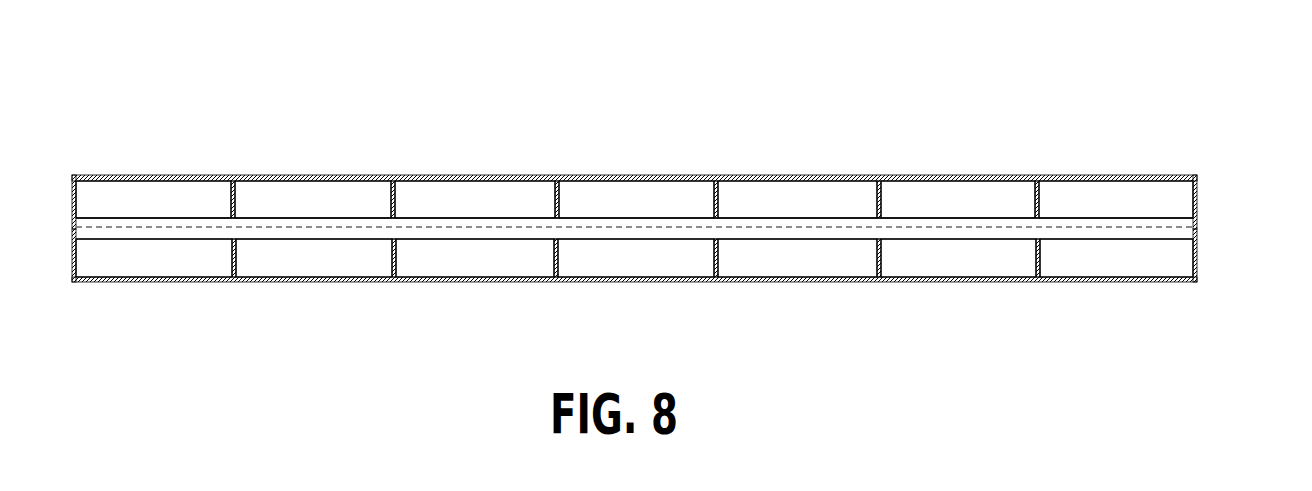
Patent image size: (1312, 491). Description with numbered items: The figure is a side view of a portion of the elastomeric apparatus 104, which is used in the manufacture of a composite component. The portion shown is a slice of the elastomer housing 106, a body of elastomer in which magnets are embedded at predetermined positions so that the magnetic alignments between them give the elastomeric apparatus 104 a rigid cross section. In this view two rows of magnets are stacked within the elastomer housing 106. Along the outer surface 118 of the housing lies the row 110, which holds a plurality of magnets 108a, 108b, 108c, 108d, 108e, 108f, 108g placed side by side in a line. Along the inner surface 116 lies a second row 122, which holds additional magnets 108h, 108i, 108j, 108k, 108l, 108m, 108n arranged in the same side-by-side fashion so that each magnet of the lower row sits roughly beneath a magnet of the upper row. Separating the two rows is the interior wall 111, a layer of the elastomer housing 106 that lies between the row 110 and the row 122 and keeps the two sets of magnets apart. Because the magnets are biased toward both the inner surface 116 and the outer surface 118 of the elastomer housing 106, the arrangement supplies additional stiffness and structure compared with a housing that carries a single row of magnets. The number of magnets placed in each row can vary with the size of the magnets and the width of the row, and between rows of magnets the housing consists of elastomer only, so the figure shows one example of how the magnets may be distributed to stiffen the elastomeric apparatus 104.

The elastomeric apparatus 104 is at (688, 187).
The elastomer housing 106 is at (1195, 232).
The magnet 108a is at (157, 192).
The magnet 108b is at (316, 192).
The magnet 108c is at (479, 192).
The magnet 108d is at (641, 192).
The magnet 108e is at (800, 192).
The magnet 108f is at (960, 192).
The magnet 108g is at (1122, 192).
The magnet 108h is at (153, 265).
The magnet 108i is at (313, 265).
The magnet 108j is at (475, 265).
The magnet 108k is at (635, 265).
The magnet 108l is at (795, 265).
The magnet 108m is at (955, 265).
The magnet 108n is at (1115, 265).
The row 110 is at (1199, 197).
The interior wall 111 is at (1148, 229).
The inner surface 116 is at (714, 284).
The outer surface 118 is at (724, 175).
The row 122 is at (1199, 262).